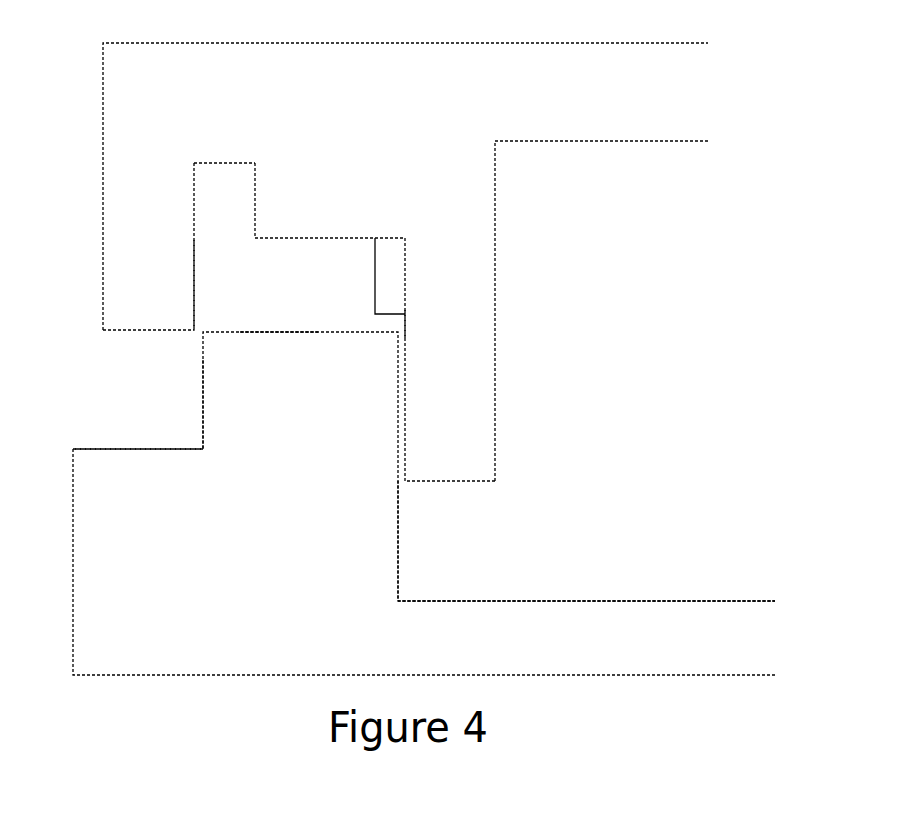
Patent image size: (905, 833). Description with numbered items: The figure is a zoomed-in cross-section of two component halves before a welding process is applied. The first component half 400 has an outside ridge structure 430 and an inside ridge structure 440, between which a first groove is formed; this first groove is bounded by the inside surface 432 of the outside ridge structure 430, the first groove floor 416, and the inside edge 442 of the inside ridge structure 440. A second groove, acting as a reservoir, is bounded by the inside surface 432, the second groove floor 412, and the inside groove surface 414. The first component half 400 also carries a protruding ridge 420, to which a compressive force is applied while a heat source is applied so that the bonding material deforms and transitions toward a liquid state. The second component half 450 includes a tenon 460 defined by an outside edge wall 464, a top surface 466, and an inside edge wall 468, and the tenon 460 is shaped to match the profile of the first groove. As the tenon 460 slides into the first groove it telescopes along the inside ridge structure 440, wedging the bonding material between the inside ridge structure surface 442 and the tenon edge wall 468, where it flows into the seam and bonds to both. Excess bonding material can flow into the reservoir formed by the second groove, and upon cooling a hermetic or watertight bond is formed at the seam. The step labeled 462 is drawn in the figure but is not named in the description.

The first component half 400 is at (557, 141).
The second groove floor 412 is at (242, 165).
The inside groove surface 414 is at (253, 215).
The first groove floor 416 is at (311, 239).
The protruding ridge 420 is at (384, 248).
The outside ridge structure 430 is at (148, 246).
The inside surface 432 is at (194, 275).
The inside ridge structure 440 is at (450, 359).
The inside edge 442 is at (403, 326).
The second component half 450 is at (575, 601).
The tenon 460 is at (424, 503).
The lower step of third region 462 is at (90, 449).
The outside edge wall 464 is at (203, 401).
The top surface 466 is at (273, 330).
The inside edge wall 468 is at (399, 551).